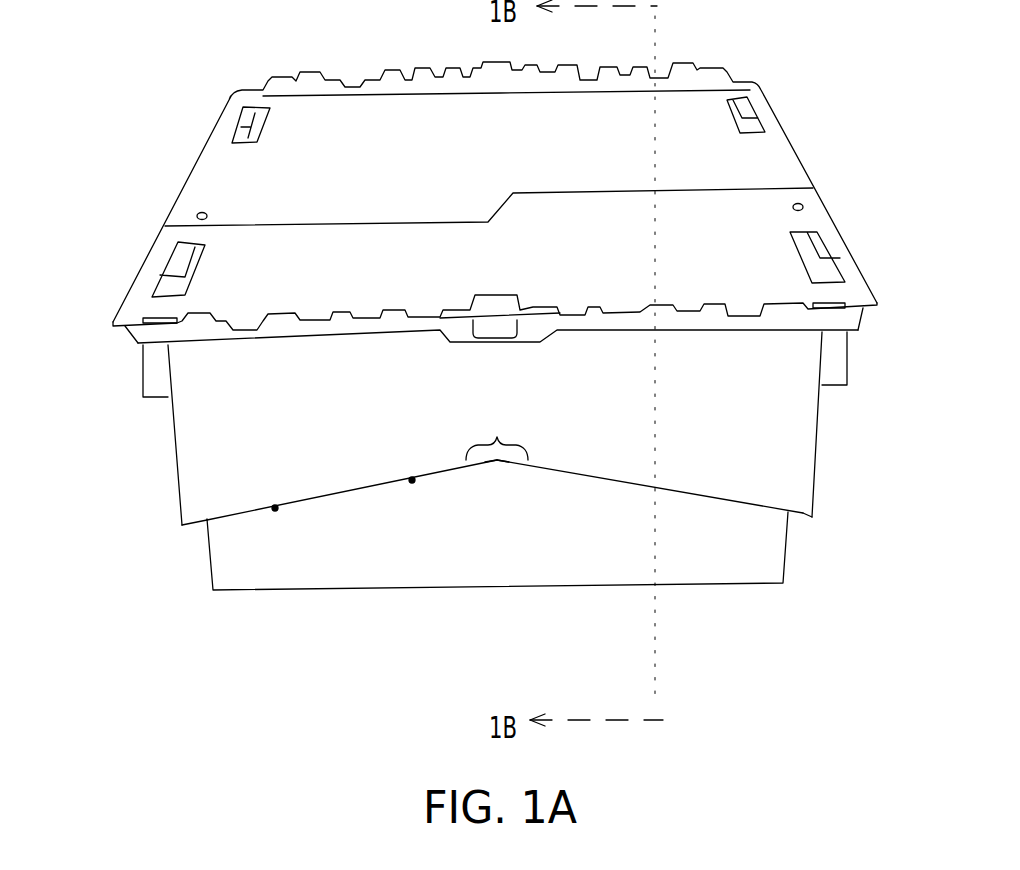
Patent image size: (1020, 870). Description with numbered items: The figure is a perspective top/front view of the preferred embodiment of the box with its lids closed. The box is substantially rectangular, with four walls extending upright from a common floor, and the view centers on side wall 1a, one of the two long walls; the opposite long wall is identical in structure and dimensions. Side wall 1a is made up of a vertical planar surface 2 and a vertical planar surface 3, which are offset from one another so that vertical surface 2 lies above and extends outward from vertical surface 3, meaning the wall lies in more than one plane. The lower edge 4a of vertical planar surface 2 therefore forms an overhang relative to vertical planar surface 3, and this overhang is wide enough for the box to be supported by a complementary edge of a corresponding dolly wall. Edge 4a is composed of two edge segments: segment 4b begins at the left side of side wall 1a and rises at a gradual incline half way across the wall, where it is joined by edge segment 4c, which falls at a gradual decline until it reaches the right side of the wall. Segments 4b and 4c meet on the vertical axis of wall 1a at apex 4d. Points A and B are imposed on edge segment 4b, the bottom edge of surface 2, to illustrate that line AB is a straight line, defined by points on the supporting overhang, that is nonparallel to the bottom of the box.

The side wall 1a is at (494, 507).
The vertical planar surface 2 is at (552, 549).
The vertical planar surface 3 is at (497, 595).
The lower edge 4a is at (497, 437).
The edge segment 4b is at (447, 480).
The edge segment 4c is at (600, 487).
The apex 4d is at (497, 463).
The point A is at (278, 488).
The point B is at (403, 465).